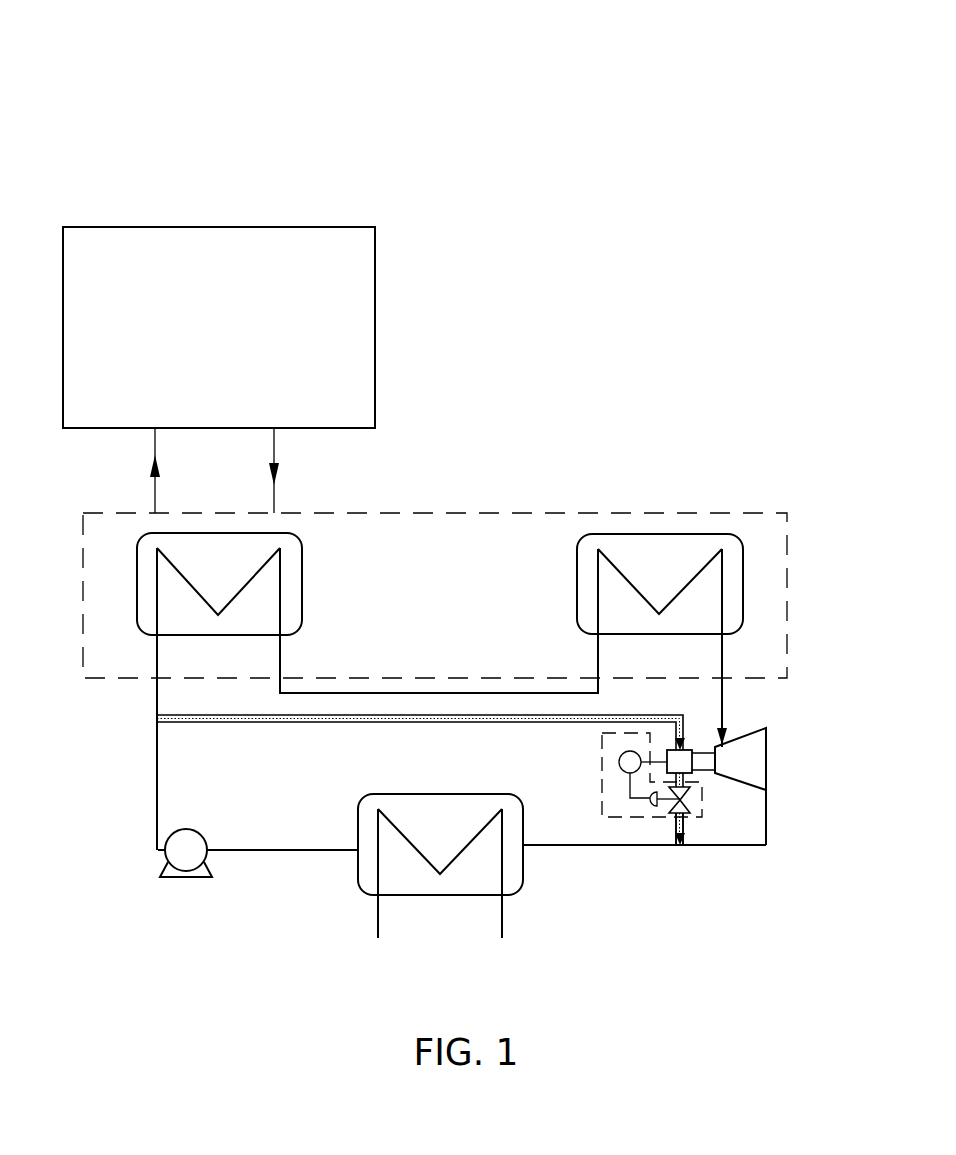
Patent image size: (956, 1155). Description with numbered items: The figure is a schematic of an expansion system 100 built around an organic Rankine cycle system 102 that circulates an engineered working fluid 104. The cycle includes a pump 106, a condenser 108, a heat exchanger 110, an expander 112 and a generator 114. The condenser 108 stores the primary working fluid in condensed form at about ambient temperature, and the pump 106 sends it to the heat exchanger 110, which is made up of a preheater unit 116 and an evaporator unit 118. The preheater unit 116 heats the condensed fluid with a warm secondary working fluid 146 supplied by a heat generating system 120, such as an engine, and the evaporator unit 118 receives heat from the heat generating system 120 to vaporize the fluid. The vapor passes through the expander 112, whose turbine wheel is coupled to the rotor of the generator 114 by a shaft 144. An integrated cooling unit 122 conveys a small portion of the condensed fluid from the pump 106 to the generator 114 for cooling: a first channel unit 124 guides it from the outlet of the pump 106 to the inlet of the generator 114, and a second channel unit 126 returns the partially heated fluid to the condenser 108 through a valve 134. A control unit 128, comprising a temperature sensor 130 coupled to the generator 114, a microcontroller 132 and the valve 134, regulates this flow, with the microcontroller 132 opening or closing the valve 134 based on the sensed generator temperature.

The expansion system 100 is at (690, 68).
The organic Rankine cycle system 102 is at (229, 892).
The engineered working fluid 104 is at (158, 780).
The pump 106 is at (158, 838).
The condenser 108 is at (455, 895).
The heat exchanger 110 is at (500, 512).
The expander 112 is at (768, 770).
The generator 114 is at (670, 748).
The preheater unit 116 is at (192, 533).
The evaporator unit 118 is at (660, 534).
The heat generating system 120 is at (233, 227).
The integrated cooling unit 122 is at (670, 833).
The first channel unit 124 is at (272, 725).
The second channel unit 126 is at (687, 822).
The control unit 128 is at (703, 813).
The temperature sensor 130 is at (618, 760).
The microcontroller 132 is at (648, 805).
The valve 134 is at (690, 797).
The shaft 144 is at (703, 752).
The secondary working fluid 146 is at (275, 455).